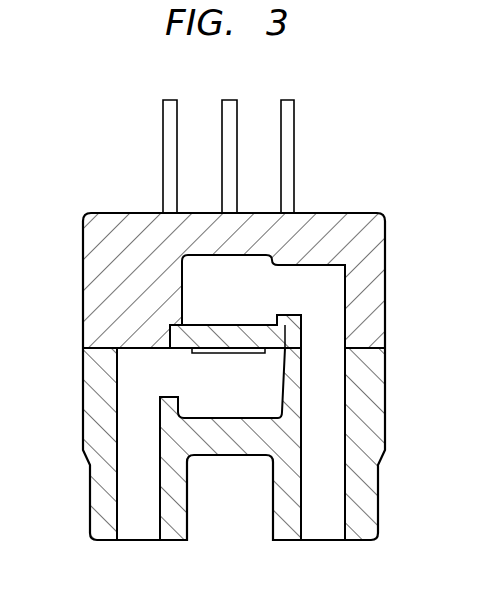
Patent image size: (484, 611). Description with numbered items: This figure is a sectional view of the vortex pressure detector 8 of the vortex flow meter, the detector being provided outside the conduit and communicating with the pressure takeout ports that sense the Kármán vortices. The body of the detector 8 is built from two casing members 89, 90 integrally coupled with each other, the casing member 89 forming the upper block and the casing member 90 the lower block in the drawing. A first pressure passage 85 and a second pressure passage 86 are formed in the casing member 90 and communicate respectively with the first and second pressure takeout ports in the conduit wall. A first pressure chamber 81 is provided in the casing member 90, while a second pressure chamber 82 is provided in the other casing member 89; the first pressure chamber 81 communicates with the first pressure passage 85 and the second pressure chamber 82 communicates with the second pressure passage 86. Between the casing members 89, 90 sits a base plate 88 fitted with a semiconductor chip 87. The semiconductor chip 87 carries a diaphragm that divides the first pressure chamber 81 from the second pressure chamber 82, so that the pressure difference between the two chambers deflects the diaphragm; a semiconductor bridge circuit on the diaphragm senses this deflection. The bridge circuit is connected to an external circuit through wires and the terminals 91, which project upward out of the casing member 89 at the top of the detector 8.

The vortex pressure detector 8 is at (344, 199).
The terminals 91 is at (296, 93).
The casing member 89 is at (93, 284).
The second pressure chamber 82 is at (190, 262).
The casing member 90 is at (96, 401).
The first pressure passage 85 is at (128, 514).
The second pressure passage 86 is at (335, 505).
The first pressure chamber 81 is at (207, 412).
The base plate 88 is at (268, 325).
The semiconductor chip 87 is at (232, 353).